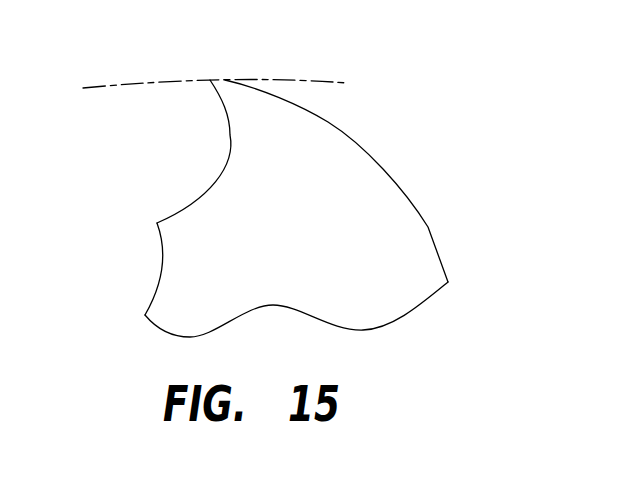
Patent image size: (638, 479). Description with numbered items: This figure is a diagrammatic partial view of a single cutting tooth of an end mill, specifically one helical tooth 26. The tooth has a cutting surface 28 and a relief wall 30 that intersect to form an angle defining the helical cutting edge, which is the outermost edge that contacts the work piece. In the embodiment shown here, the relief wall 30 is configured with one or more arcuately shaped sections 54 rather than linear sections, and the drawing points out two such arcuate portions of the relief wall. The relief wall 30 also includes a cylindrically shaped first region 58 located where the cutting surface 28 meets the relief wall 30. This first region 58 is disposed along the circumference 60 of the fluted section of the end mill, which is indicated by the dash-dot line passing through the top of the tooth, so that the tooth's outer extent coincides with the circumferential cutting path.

The helical tooth 26 is at (172, 197).
The cutting surface 28 is at (210, 140).
The relief wall 30 is at (400, 157).
The arcuately shaped section 54 is at (328, 122).
The cylindrically shaped first region 58 is at (210, 80).
The circumference 60 is at (323, 82).